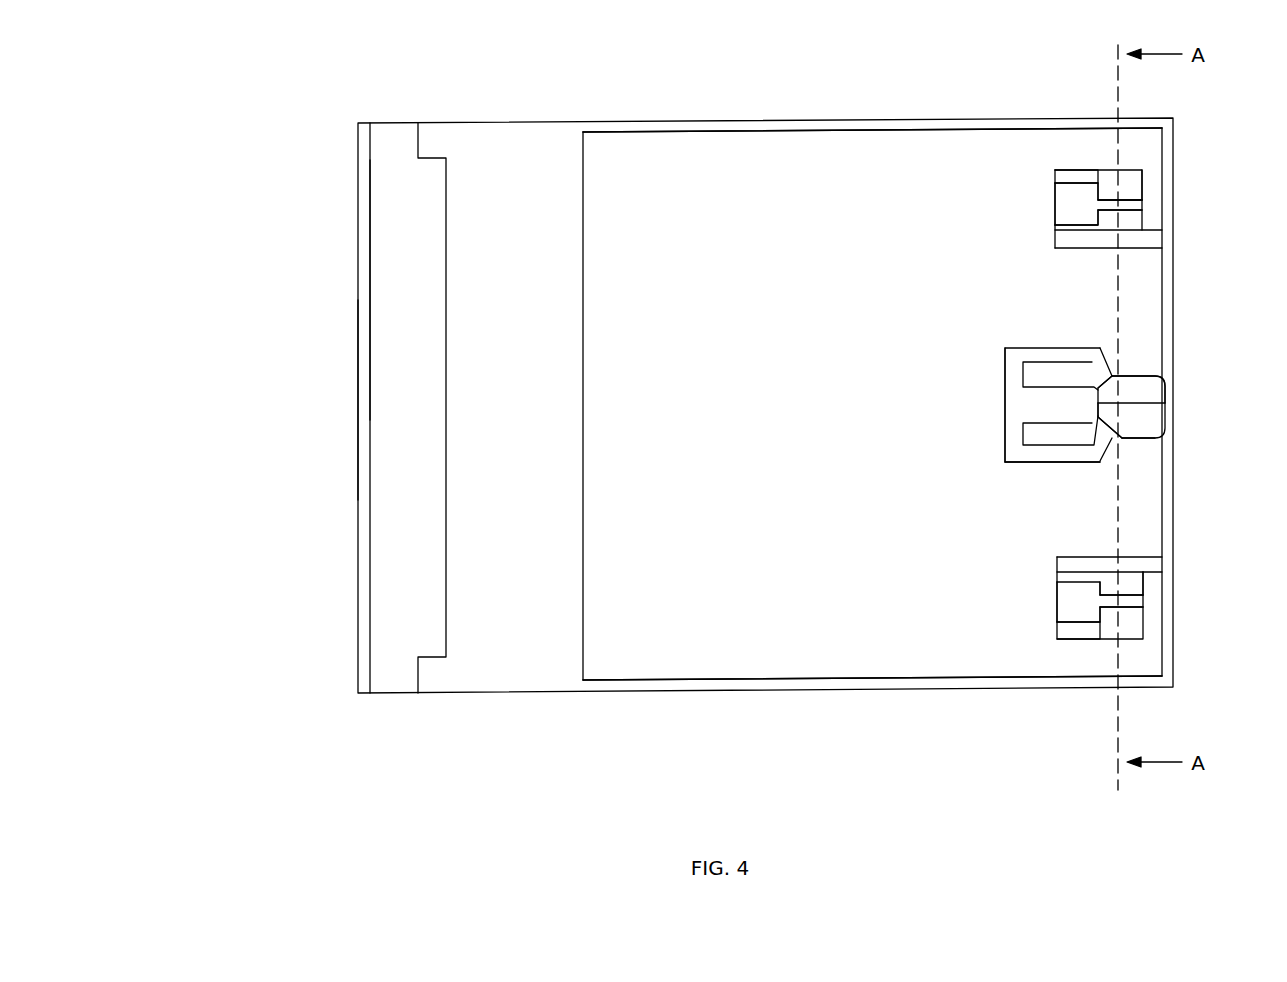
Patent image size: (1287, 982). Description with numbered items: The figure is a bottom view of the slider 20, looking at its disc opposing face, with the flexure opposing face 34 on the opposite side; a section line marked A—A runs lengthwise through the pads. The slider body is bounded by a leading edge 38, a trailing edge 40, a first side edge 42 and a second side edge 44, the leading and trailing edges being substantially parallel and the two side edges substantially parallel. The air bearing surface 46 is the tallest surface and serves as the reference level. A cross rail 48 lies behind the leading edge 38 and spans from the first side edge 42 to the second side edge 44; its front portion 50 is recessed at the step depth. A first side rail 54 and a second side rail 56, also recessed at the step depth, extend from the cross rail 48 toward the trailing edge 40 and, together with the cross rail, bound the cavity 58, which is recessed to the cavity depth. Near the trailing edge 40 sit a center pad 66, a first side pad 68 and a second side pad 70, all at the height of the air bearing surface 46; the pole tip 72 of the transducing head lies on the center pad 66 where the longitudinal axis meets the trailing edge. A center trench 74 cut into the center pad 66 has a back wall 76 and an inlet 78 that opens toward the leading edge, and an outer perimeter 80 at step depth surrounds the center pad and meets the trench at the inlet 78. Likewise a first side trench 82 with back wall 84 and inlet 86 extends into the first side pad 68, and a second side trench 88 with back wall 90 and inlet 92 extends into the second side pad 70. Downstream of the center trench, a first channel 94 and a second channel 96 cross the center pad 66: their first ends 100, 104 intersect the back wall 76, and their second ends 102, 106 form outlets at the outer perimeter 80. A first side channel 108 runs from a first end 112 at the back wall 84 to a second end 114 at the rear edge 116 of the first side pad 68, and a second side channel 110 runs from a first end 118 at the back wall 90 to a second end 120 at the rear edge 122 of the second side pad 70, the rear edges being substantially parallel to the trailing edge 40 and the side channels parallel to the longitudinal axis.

The slider 20 is at (255, 135).
The flexure opposing face 34 is at (490, 165).
The leading edge 38 is at (355, 388).
The trailing edge 40 is at (1176, 512).
The first side edge 42 is at (716, 122).
The second side edge 44 is at (828, 690).
The air bearing surface 46 is at (493, 647).
The cross rail 48 is at (372, 123).
The front portion 50 is at (402, 294).
The first side rail 54 is at (806, 130).
The second side rail 56 is at (717, 688).
The cavity 58 is at (656, 662).
The center pad 66 is at (1168, 379).
The first side pad 68 is at (1128, 207).
The second side pad 70 is at (1125, 612).
The pole tip 72 is at (1138, 398).
The center trench 74 is at (1038, 403).
The back wall 76 is at (1130, 405).
The inlet 78 is at (1023, 408).
The outer perimeter 80 is at (1072, 452).
The first side trench 82 is at (1080, 190).
The back wall 84 is at (1123, 188).
The inlet 86 is at (1062, 212).
The second side trench 88 is at (1085, 612).
The back wall 90 is at (1147, 572).
The inlet 92 is at (1064, 632).
The first channel 94 is at (1108, 368).
The second channel 96 is at (1115, 443).
The first end 100 is at (1097, 383).
The second end 102 is at (1112, 380).
The first end 104 is at (1088, 447).
The second end 106 is at (1124, 438).
The first side channel 108 is at (1148, 213).
The second side channel 110 is at (1135, 598).
The first end 112 is at (1090, 233).
The second end 114 is at (1143, 188).
The rear edge 116 is at (1143, 178).
The first end 118 is at (1105, 645).
The second end 120 is at (1143, 597).
The rear edge 122 is at (1143, 618).